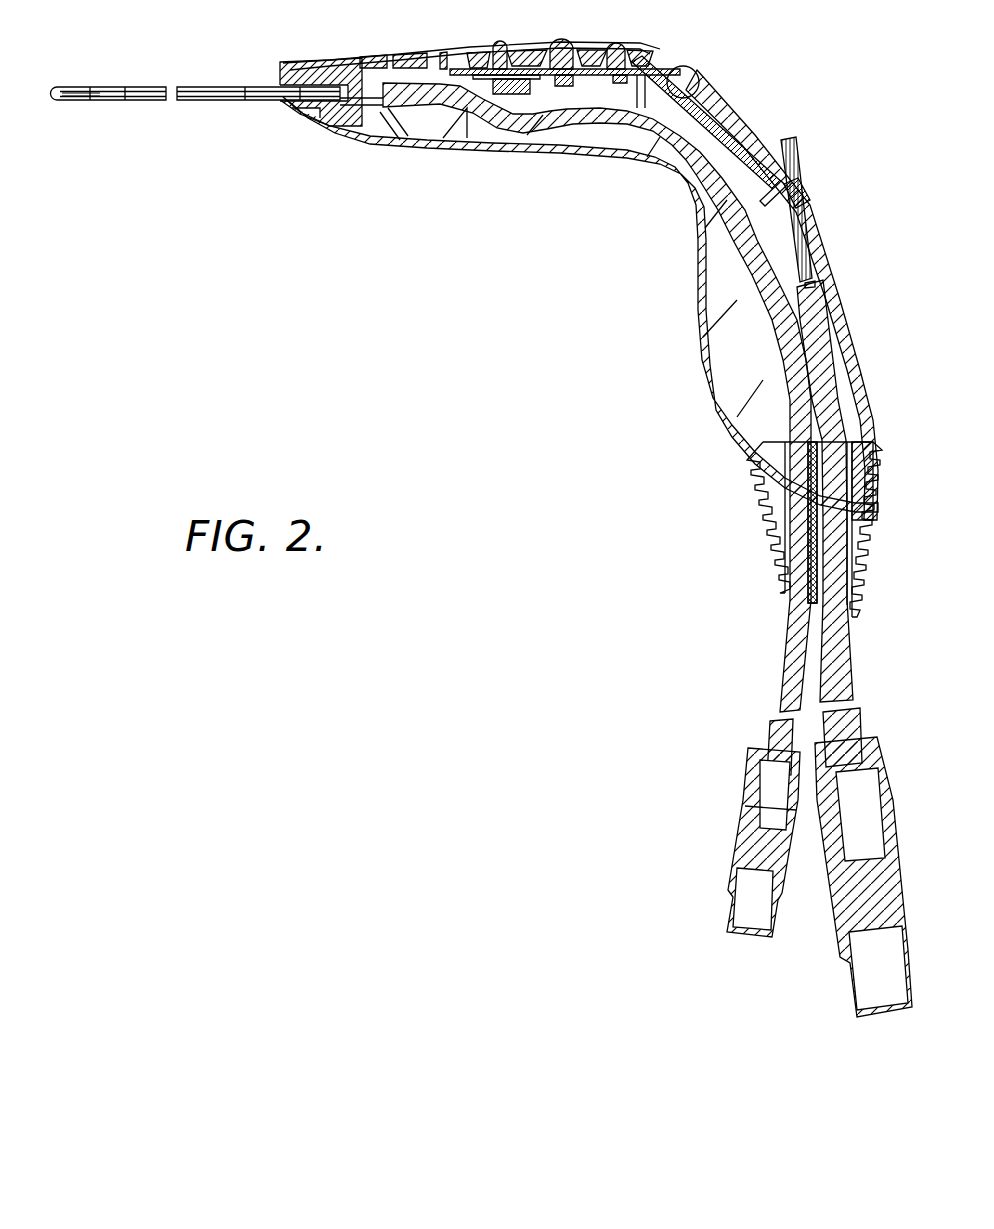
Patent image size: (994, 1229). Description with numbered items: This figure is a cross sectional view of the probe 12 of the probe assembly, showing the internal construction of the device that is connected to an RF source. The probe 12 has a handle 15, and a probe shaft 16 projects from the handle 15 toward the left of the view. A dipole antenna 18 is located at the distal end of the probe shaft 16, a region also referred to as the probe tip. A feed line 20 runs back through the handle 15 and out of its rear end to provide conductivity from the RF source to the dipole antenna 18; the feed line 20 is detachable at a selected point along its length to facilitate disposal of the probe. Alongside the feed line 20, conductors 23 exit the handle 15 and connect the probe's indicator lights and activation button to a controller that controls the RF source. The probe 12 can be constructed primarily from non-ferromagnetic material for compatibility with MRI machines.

The probe 12 is at (754, 41).
The handle 15 is at (697, 310).
The probe shaft 16 is at (210, 87).
The dipole antenna 18 is at (103, 104).
The feed line 20 is at (787, 650).
The conductors 23 is at (853, 677).